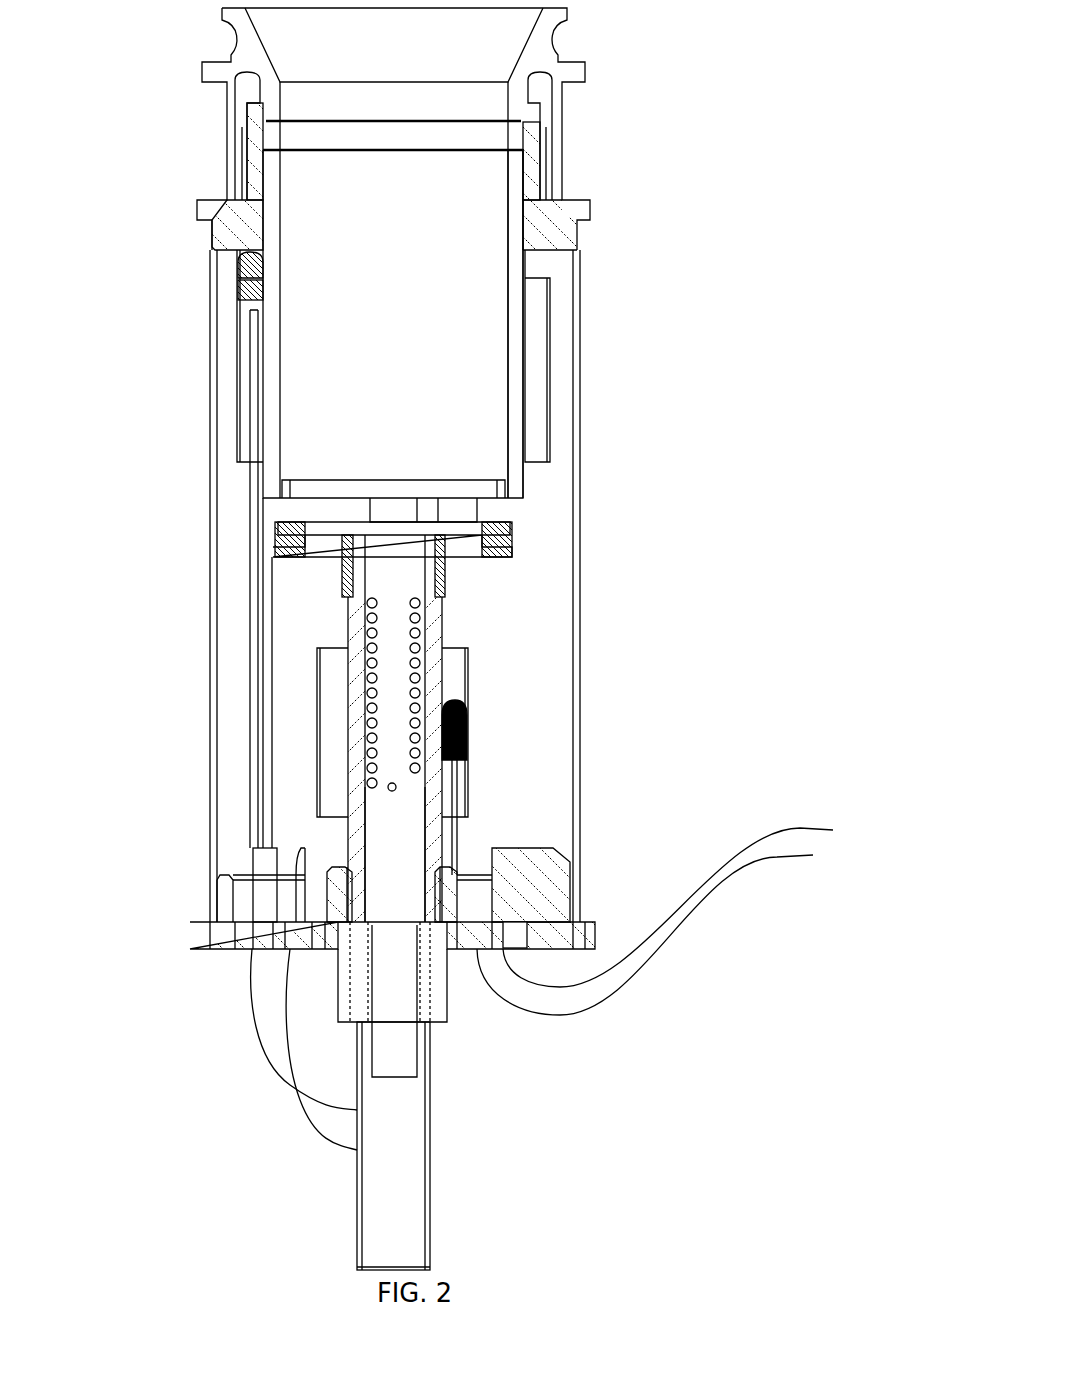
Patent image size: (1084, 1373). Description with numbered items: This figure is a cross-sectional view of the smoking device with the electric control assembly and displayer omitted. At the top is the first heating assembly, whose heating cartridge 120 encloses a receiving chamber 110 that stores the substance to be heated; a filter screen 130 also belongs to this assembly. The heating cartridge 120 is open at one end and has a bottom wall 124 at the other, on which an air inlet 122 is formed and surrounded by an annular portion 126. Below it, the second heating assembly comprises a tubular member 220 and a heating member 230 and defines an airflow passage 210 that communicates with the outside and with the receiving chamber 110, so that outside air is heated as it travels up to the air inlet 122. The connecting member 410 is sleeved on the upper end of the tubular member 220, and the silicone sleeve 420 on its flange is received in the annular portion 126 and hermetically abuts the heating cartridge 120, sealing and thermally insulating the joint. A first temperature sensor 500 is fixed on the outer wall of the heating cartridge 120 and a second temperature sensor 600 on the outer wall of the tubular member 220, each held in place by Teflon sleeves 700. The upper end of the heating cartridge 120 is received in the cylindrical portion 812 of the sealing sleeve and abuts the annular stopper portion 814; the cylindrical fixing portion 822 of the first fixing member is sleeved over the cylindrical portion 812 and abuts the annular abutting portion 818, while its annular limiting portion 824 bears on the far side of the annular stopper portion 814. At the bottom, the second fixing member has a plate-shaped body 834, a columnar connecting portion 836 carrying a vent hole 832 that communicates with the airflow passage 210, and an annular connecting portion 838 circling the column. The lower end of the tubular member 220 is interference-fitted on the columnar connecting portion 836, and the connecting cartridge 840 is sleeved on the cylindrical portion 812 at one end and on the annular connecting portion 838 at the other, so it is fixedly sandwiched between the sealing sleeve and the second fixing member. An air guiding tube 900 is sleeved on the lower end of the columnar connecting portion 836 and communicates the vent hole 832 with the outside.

The receiving chamber 110 is at (470, 275).
The heating cartridge 120 is at (515, 350).
The air inlet 122 is at (393, 505).
The bottom wall 124 is at (370, 505).
The annular portion 126 is at (275, 532).
The filter screen 130 is at (503, 487).
The airflow passage 210 is at (400, 828).
The tubular member 220 is at (443, 617).
The heating member 230 is at (367, 630).
The connecting member 410 is at (443, 572).
The silicone sleeve 420 is at (495, 540).
The first temperature sensor 500 is at (240, 270).
The second temperature sensor 600 is at (467, 725).
The Teflon sleeve 700 is at (243, 415).
The cylindrical portion 812 is at (267, 177).
The annular stopper portion 814 is at (270, 137).
The annular abutting portion 818 is at (578, 206).
The cylindrical fixing portion 822 is at (232, 107).
The annular limiting portion 824 is at (508, 98).
The vent hole 832 is at (390, 1027).
The plate-shaped body 834 is at (197, 935).
The columnar connecting portion 836 is at (427, 977).
The annular connecting portion 838 is at (225, 887).
The connecting cartridge 840 is at (215, 588).
The air guiding tube 900 is at (357, 1203).